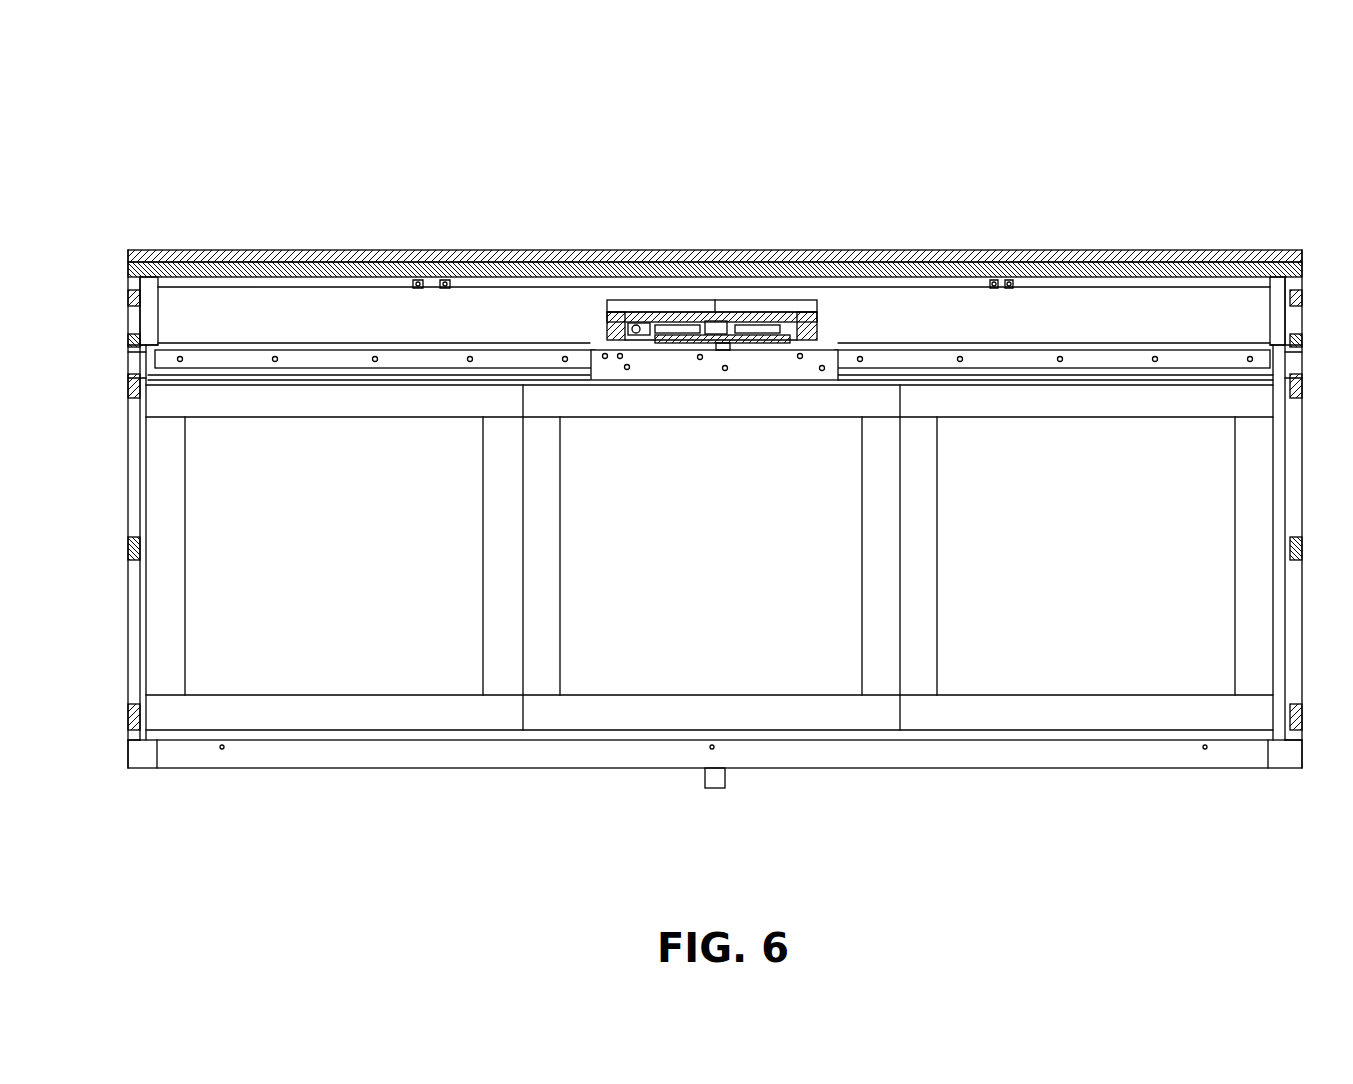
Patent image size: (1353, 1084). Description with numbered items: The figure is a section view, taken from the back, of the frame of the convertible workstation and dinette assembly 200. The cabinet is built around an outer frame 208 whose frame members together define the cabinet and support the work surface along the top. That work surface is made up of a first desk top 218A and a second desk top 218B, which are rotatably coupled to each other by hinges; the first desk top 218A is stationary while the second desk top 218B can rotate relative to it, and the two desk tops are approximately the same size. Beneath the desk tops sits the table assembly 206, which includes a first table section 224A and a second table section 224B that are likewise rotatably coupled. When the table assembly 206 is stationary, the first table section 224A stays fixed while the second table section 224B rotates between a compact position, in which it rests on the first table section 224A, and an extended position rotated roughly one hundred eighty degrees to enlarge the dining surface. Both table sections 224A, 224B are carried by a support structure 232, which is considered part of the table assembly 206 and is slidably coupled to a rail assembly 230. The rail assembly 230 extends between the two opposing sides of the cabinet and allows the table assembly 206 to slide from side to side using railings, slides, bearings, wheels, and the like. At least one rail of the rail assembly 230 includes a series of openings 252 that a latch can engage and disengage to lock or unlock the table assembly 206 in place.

The dinette assembly 200 is at (701, 405).
The table assembly 206 is at (689, 228).
The outer frame 208 is at (410, 765).
The first desk top 218A is at (1025, 268).
The second desk top 218B is at (932, 258).
The first table section 224A is at (607, 328).
The second table section 224B is at (680, 300).
The rail assembly 230 is at (995, 362).
The support structure 232 is at (672, 372).
The openings 252 is at (277, 362).